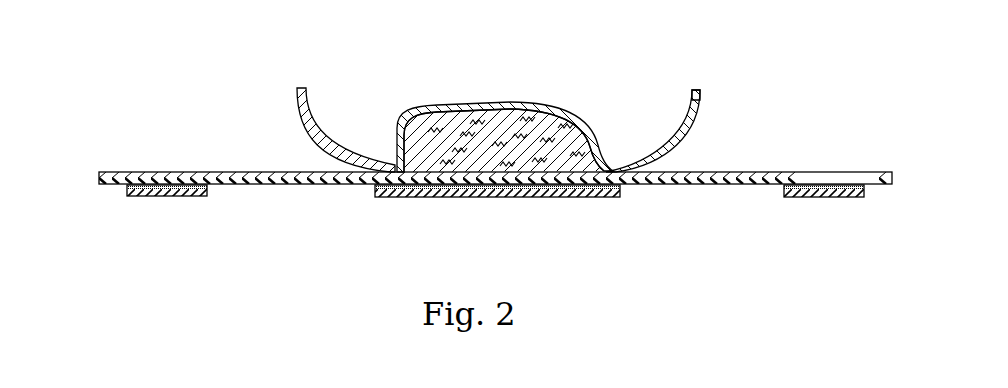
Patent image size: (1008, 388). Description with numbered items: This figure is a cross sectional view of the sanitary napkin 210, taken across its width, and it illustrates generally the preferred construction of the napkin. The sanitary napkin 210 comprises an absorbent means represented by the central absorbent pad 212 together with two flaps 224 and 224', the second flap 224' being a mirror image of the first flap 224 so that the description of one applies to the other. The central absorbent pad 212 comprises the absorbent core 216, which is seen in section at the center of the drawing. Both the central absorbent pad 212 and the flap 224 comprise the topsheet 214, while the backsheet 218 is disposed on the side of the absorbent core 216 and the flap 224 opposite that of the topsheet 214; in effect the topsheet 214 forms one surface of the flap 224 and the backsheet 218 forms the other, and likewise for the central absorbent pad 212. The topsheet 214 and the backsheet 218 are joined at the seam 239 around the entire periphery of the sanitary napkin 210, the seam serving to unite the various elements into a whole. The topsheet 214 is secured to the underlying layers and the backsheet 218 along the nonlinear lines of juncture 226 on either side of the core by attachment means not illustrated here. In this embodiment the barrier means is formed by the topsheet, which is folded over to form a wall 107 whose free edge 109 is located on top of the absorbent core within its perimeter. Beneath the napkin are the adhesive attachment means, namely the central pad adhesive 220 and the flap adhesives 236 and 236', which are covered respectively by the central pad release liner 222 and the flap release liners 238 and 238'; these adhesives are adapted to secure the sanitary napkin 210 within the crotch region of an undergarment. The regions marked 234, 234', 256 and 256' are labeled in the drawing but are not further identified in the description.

The wall 107 is at (690, 107).
The free edge 109 is at (697, 92).
The sanitary napkin 210 is at (538, 88).
The central absorbent pad 212 is at (446, 88).
The topsheet 214 is at (585, 112).
The absorbent core 216 is at (507, 110).
The backsheet 218 is at (655, 186).
The central pad adhesive 220 is at (377, 189).
The central pad release liner 222 is at (482, 193).
The flap 224 is at (234, 102).
The flap 224' is at (749, 141).
The nonlinear line of juncture 226 is at (384, 165).
The strip section 234 is at (179, 136).
The strip section 234' is at (818, 120).
The flap adhesive 236 is at (207, 222).
The flap adhesive 236' is at (773, 206).
The flap release liner 238 is at (140, 228).
The flap release liner 238' is at (816, 226).
The seam 239 is at (110, 173).
The strip region 256 is at (281, 113).
The strip region 256' is at (728, 121).